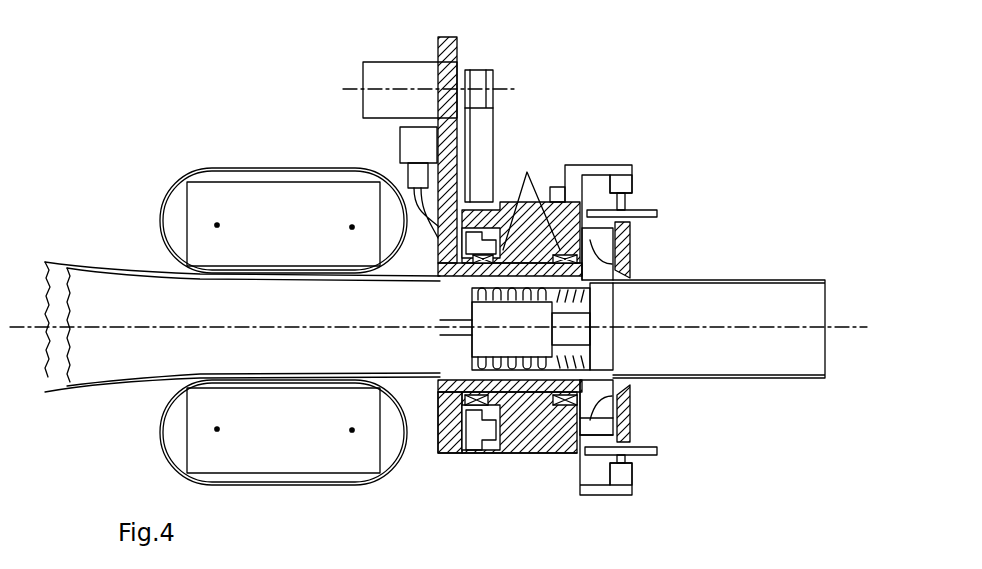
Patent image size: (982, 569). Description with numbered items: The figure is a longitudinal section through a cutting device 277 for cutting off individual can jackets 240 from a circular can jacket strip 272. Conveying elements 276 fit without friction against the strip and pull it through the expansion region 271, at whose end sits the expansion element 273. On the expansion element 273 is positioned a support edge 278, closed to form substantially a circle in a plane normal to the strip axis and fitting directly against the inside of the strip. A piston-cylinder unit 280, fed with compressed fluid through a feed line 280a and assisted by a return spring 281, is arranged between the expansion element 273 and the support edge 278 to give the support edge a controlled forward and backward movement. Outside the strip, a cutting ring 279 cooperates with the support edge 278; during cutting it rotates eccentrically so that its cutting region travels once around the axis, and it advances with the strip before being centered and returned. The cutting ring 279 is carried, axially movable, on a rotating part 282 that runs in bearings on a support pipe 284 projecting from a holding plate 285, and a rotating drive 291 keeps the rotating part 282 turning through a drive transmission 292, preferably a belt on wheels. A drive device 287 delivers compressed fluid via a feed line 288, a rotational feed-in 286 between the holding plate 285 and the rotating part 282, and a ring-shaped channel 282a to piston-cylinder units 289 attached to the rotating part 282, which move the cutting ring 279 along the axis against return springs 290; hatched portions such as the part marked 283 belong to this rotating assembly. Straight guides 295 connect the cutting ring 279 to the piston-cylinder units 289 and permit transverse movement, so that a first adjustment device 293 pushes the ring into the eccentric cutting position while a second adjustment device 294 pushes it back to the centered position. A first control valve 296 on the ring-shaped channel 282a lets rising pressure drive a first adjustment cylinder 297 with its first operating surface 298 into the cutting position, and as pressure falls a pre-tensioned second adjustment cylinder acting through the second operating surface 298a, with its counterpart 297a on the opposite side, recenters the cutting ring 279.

The can jacket 240 is at (774, 278).
The expansion region 271 is at (68, 261).
The circular can jacket strip 272 is at (413, 381).
The expansion element 273 is at (59, 293).
The conveying elements 276 is at (157, 409).
The cutting device 277 is at (474, 270).
The support edge 278 is at (616, 293).
The cutting ring 279 is at (627, 275).
The piston-cylinder unit 280 is at (532, 456).
The feed line 280a is at (93, 337).
The return spring 281 is at (616, 358).
The rotating part 282 is at (562, 185).
The ring-shaped channel 282a is at (484, 432).
The housing hatched part 283 is at (530, 198).
The support pipe 284 is at (451, 288).
The holding plate 285 is at (450, 456).
The rotational feed-in 286 is at (444, 234).
The drive device 287 is at (397, 135).
The feed line 288 is at (409, 194).
The piston-cylinder unit 289 is at (626, 268).
The return spring 290 is at (666, 211).
The rotating drive 291 is at (400, 58).
The drive transmission 292 is at (501, 120).
The first adjustment device 293 is at (650, 157).
The second adjustment device 294 is at (666, 508).
The straight guides 295 is at (633, 248).
The first control valve 296 is at (576, 180).
The first adjustment cylinder 297 is at (636, 186).
The lower box 297a is at (636, 478).
The first operating surface 298 is at (666, 212).
The second adjustment cylinder / second operating surface 298a is at (658, 451).